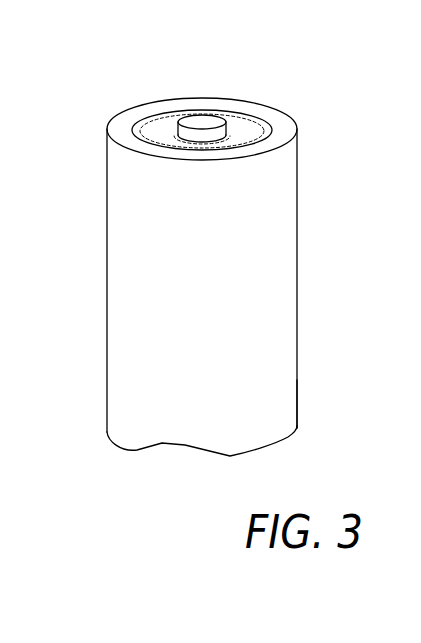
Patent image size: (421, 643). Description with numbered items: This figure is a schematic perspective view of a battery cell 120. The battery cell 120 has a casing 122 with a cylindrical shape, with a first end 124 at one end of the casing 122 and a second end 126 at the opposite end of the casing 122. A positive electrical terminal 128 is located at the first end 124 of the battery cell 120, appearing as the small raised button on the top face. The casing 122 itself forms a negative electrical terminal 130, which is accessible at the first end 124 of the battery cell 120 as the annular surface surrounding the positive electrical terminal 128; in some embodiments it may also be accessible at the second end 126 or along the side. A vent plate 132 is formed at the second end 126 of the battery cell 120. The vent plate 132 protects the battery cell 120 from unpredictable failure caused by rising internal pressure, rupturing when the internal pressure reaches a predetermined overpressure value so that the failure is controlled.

The battery cell 120 is at (211, 263).
The casing 122 is at (107, 213).
The first end 124 is at (304, 128).
The second end 126 is at (303, 423).
The positive electrical terminal 128 is at (204, 122).
The negative electrical terminal 130 is at (130, 131).
The vent plate 132 is at (183, 448).